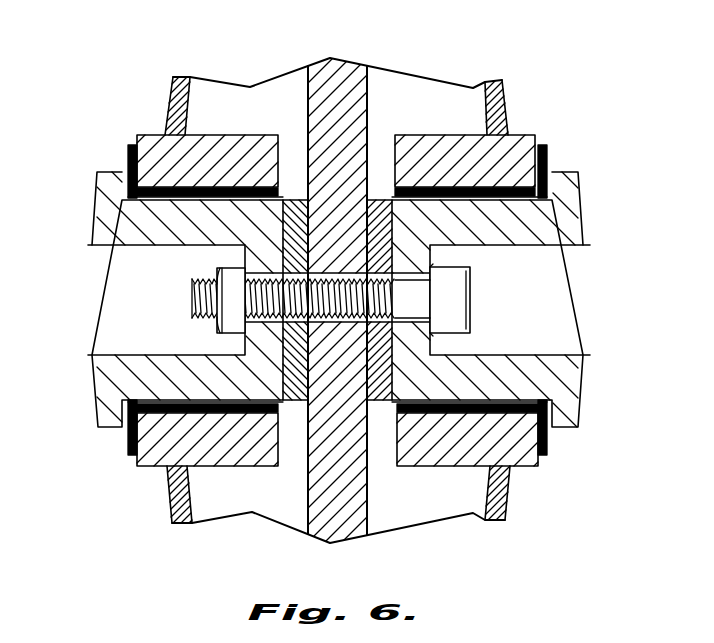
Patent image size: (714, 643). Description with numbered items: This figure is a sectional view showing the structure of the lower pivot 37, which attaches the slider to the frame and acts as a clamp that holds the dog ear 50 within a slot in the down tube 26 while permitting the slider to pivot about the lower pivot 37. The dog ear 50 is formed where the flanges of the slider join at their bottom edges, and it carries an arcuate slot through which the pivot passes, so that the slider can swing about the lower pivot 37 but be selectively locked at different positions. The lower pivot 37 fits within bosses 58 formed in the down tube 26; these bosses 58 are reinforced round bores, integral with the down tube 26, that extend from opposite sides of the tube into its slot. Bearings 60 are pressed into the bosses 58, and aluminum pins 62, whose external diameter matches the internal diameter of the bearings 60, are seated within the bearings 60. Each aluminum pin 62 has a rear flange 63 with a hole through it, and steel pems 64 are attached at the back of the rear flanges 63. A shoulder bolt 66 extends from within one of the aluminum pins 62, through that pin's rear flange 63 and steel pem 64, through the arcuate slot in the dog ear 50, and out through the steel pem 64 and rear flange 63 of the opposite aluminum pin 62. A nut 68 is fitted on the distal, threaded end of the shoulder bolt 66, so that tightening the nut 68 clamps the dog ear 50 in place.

The down tube 26 is at (177, 95).
The lower pivot 37 is at (568, 53).
The dog ear 50 is at (345, 80).
The bosses 58 is at (236, 140).
The bearings 60 is at (127, 158).
The aluminum pins 62 is at (97, 218).
The rear flanges 63 is at (245, 258).
The steel pems 64 is at (292, 205).
The shoulder bolt 66 is at (455, 305).
The nut 68 is at (224, 330).